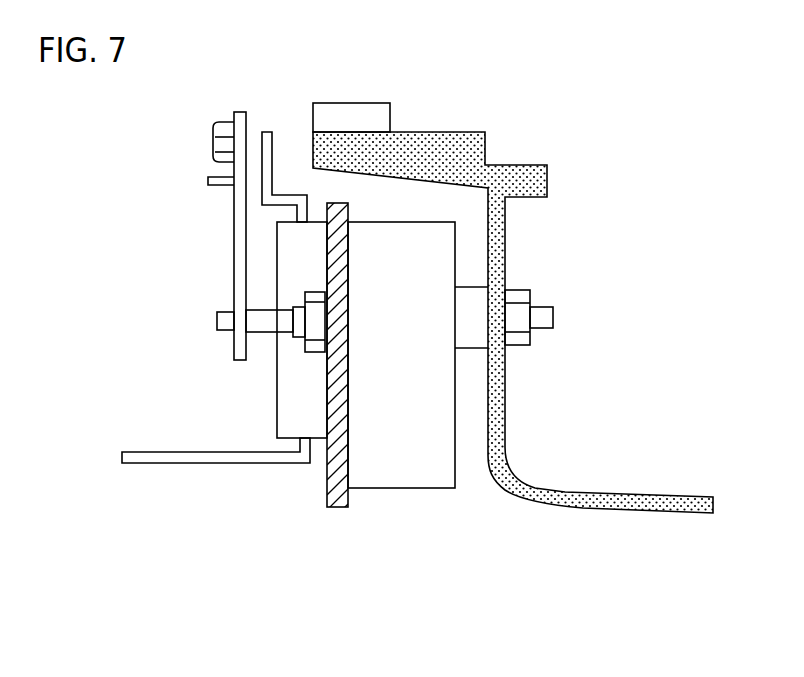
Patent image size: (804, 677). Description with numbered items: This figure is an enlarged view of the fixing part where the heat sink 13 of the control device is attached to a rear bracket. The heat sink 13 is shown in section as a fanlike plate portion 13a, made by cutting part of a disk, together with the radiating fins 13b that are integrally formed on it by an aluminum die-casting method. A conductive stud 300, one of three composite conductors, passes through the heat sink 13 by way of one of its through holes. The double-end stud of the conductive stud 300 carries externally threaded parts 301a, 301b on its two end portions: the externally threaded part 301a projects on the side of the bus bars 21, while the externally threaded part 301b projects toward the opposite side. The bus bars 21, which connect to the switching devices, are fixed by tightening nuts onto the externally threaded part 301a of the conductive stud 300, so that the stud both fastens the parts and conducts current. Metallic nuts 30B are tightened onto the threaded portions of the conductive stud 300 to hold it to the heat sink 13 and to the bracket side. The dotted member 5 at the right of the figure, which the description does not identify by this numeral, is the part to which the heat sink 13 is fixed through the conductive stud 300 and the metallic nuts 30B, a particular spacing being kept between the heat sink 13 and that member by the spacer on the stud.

The frame member 5 is at (573, 497).
The bus bar 21 is at (237, 222).
The conductive stud 300 is at (302, 337).
The externally threaded part 301a is at (220, 320).
The externally threaded part 301b is at (550, 307).
The metallic nut 30B is at (303, 302).
The heat sink 13 is at (336, 425).
The plate portion 13a is at (327, 473).
The radiating fins 13b is at (405, 490).